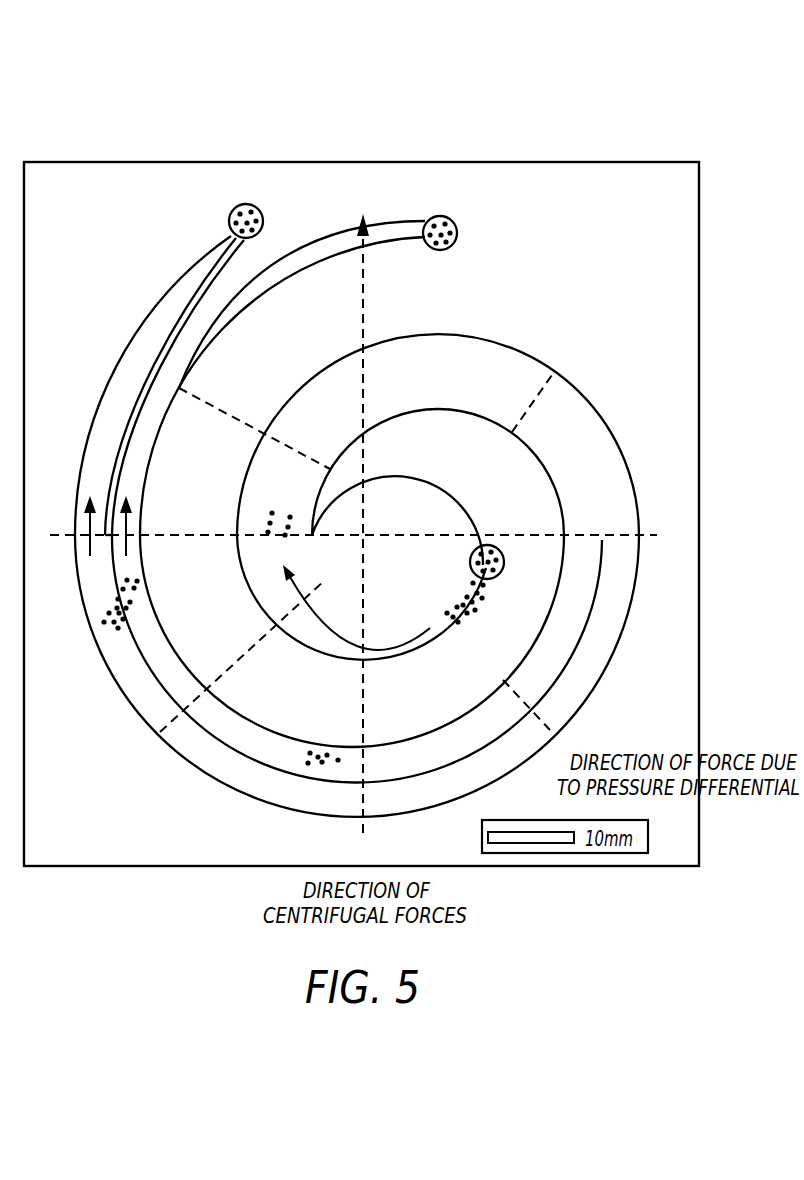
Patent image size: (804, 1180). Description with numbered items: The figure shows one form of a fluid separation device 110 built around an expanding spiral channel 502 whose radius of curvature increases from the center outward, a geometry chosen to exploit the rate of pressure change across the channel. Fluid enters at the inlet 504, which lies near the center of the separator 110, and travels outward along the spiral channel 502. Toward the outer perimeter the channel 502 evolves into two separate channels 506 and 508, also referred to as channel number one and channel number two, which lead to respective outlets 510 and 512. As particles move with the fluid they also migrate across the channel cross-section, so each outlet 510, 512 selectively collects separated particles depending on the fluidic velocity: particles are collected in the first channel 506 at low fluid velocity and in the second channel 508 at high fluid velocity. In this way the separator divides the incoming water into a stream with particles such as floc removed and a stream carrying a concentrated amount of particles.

The separation device 110 is at (86, 86).
The spiral channel 502 is at (615, 478).
The inlet 504 is at (497, 566).
The channel #1 506 is at (394, 231).
The channel #2 508 is at (182, 283).
The outlet 510 is at (436, 223).
The outlet 512 is at (245, 223).